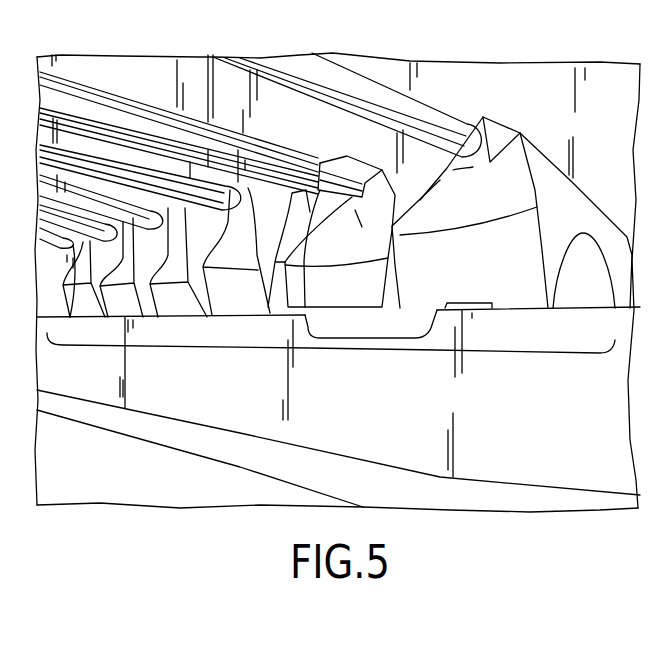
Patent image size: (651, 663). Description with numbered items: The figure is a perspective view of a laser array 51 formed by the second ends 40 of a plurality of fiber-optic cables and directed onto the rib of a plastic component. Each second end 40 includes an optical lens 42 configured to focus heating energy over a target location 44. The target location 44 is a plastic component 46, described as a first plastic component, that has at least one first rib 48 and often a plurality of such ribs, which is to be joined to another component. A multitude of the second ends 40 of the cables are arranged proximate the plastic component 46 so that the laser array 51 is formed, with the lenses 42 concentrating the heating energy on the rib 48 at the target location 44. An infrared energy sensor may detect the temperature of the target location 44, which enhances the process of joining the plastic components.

The second end 40 is at (318, 150).
The optical lens 42 is at (545, 193).
The first rib 48 is at (480, 410).
The laser array 51 is at (368, 352).
The target location 44 is at (185, 496).
The plastic component 46 is at (200, 458).